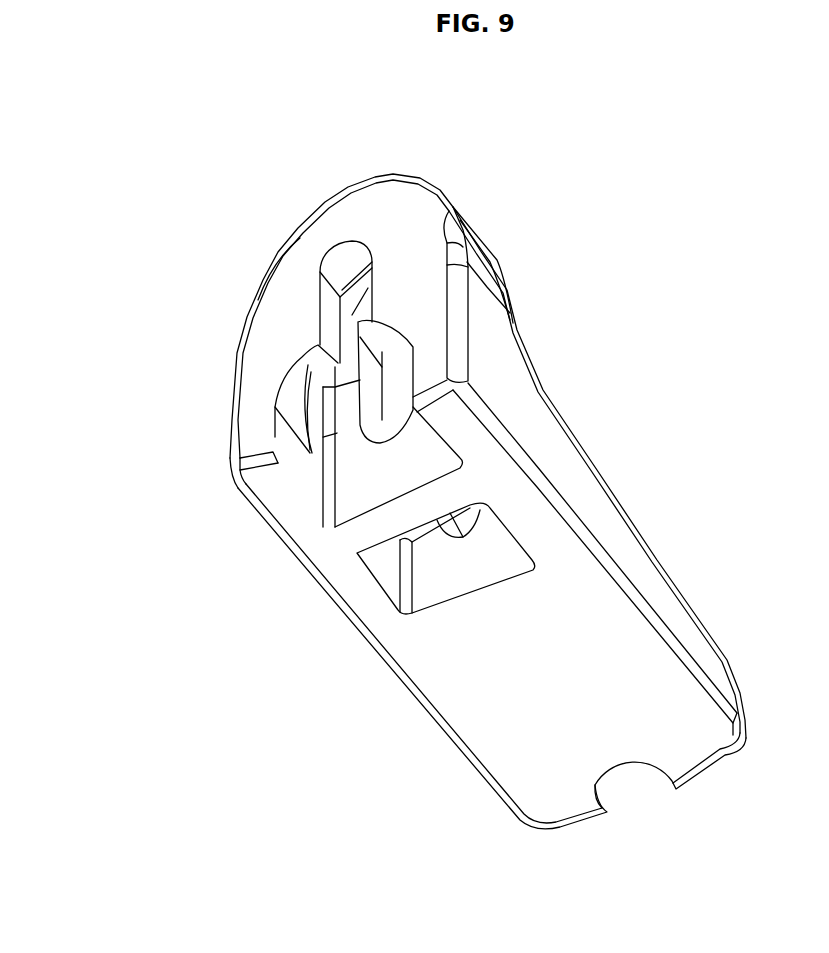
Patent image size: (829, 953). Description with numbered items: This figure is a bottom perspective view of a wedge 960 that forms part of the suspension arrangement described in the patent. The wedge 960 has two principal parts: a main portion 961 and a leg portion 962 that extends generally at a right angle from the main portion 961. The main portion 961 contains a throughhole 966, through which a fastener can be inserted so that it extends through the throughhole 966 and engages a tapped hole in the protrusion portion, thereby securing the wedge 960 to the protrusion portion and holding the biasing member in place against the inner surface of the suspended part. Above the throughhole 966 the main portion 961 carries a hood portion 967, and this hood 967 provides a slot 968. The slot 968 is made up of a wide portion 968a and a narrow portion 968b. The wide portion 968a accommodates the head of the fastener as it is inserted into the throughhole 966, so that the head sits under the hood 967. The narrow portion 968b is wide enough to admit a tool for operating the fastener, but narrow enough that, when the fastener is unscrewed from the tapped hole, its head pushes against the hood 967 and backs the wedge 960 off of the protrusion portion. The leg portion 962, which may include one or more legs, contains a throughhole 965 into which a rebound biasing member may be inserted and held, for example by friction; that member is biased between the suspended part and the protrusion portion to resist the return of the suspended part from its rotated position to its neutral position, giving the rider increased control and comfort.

The wedge 960 is at (225, 158).
The main portion 961 is at (487, 270).
The leg portion 962 is at (489, 693).
The throughhole 965 is at (388, 602).
The throughhole 966 is at (372, 410).
The hood portion 967 is at (302, 278).
The slot 968 is at (268, 360).
The wide portion 968a is at (277, 403).
The narrow portion 968b is at (317, 307).